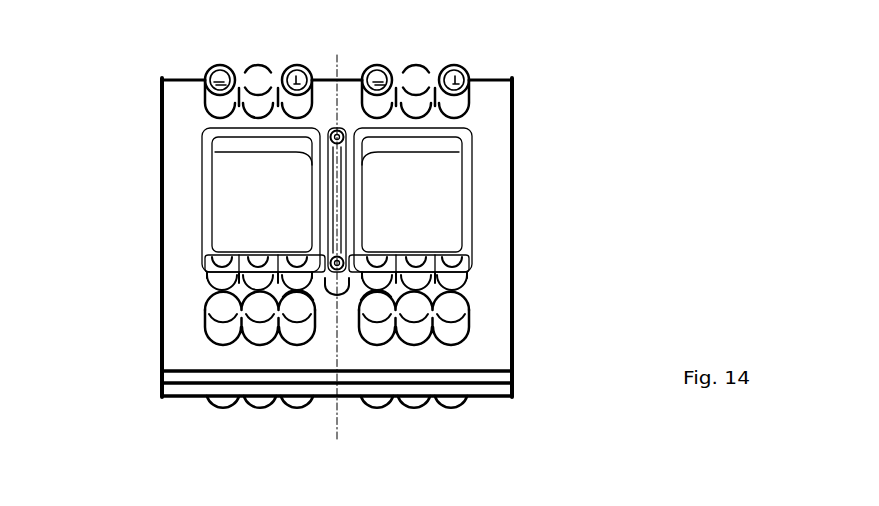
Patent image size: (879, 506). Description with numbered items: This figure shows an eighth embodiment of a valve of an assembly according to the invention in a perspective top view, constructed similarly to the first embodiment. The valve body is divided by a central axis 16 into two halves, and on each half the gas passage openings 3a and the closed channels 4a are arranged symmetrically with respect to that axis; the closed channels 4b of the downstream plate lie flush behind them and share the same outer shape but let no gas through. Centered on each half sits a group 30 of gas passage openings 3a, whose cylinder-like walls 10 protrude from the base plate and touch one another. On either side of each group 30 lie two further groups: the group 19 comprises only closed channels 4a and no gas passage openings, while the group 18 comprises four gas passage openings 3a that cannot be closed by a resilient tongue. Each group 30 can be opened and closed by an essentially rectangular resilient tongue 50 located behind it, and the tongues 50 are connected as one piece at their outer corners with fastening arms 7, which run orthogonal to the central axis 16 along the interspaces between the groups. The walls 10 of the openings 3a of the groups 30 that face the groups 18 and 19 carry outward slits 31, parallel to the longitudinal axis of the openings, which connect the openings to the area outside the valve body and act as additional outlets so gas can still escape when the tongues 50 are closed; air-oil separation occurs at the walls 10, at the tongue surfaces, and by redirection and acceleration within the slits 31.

The gas passage opening 3a is at (461, 70).
The closed channel 4a is at (253, 76).
The closed channel 4b is at (222, 403).
The fastening arm 7 is at (245, 131).
The wall 10 is at (207, 317).
The central axis 16 is at (335, 420).
The group 18 is at (212, 70).
The group 19 is at (260, 312).
The group 30 is at (210, 285).
The outward slit 31 is at (373, 292).
The resilient tongue 50 is at (245, 191).